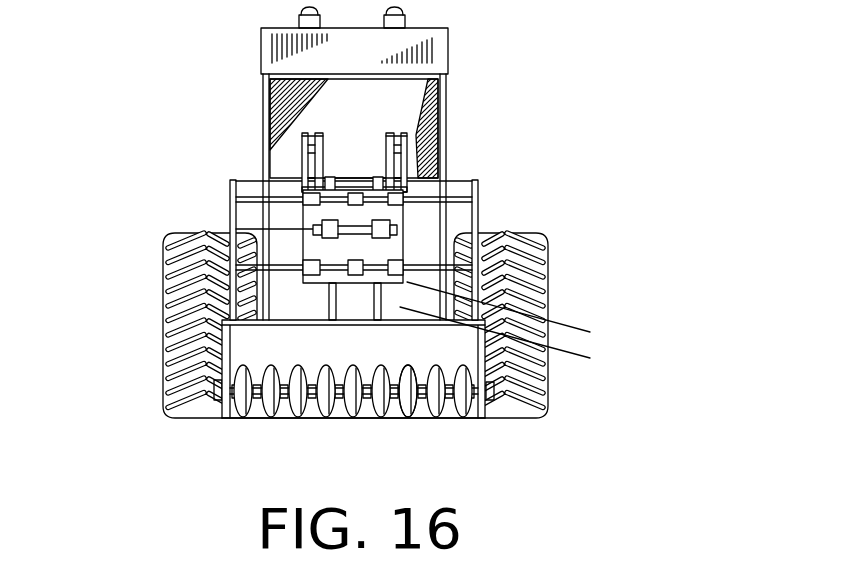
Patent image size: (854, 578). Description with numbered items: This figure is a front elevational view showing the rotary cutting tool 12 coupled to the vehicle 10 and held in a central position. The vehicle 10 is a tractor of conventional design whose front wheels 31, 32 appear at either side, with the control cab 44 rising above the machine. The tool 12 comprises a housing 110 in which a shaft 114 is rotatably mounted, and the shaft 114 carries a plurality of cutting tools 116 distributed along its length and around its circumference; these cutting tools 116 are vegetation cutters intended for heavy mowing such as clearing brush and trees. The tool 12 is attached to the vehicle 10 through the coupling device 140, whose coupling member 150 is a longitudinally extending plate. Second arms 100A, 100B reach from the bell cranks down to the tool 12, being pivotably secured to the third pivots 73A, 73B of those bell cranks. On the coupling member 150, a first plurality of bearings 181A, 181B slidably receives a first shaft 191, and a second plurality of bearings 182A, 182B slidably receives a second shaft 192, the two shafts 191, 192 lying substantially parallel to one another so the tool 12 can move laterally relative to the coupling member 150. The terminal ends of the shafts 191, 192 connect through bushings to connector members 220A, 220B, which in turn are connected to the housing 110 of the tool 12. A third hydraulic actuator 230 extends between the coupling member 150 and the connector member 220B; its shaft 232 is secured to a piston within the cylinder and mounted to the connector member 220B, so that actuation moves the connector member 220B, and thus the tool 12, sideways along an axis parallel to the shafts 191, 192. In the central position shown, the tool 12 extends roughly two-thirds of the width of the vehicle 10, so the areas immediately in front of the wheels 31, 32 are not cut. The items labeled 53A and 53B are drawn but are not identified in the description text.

The vehicle 10 is at (607, 70).
The rotary cutting tool 12 is at (463, 420).
The front wheel 31 is at (548, 400).
The front wheel 32 is at (165, 410).
The control cab 44 is at (302, 112).
The right clamp connector 53A is at (407, 149).
The left clamp connector 53B is at (302, 149).
The third pivot 73A is at (407, 134).
The third pivot 73B is at (302, 134).
The second arm 100A is at (407, 143).
The second arm 100B is at (302, 143).
The housing 110 is at (331, 323).
The shaft 114 is at (428, 418).
The cutting tools 116 is at (248, 420).
The coupling device 140 is at (137, 120).
The coupling member 150 is at (403, 240).
The bearing 181A is at (403, 204).
The bearing 181B is at (302, 203).
The bearing 182A is at (405, 272).
The bearing 182B is at (302, 272).
The first shaft 191 is at (303, 199).
The second shaft 192 is at (303, 268).
The connector member 220A is at (477, 181).
The connector member 220B is at (232, 181).
The third hydraulic actuator 230 is at (348, 173).
The shaft 232 is at (235, 238).